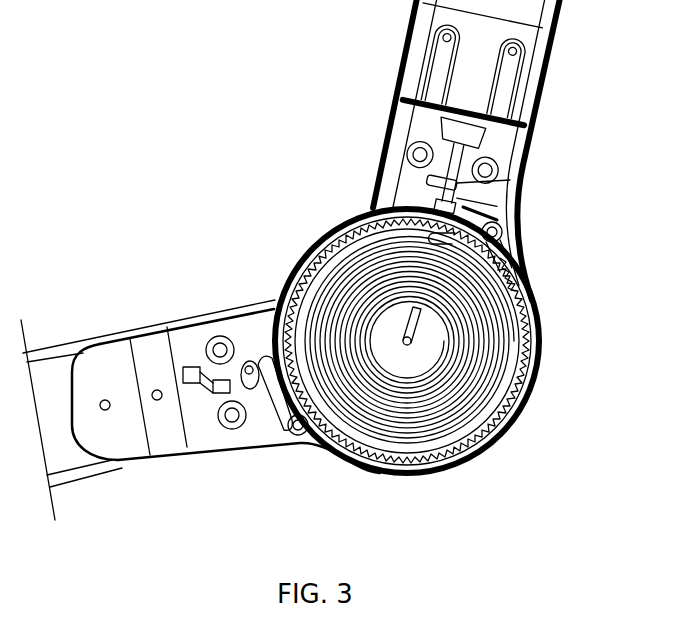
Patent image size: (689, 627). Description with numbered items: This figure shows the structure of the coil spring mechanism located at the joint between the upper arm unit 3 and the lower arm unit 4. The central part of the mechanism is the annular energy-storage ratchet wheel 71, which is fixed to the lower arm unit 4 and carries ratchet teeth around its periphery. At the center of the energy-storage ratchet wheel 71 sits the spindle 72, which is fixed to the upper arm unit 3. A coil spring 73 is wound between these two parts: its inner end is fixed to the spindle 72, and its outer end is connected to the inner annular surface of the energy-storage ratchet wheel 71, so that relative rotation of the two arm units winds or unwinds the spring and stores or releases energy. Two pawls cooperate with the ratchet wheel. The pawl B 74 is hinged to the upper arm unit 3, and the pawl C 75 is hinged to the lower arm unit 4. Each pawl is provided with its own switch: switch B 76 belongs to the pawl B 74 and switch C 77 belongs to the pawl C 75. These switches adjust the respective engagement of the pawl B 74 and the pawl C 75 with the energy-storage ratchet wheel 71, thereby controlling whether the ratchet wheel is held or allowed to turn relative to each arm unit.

The upper arm unit 3 is at (400, 80).
The lower arm unit 4 is at (140, 327).
The energy-storage ratchet wheel 71 is at (498, 273).
The spindle 72 is at (427, 352).
The coil spring 73 is at (470, 305).
The pawl B 74 is at (477, 218).
The pawl C 75 is at (285, 400).
The switch B 76 is at (433, 178).
The switch C 77 is at (187, 433).